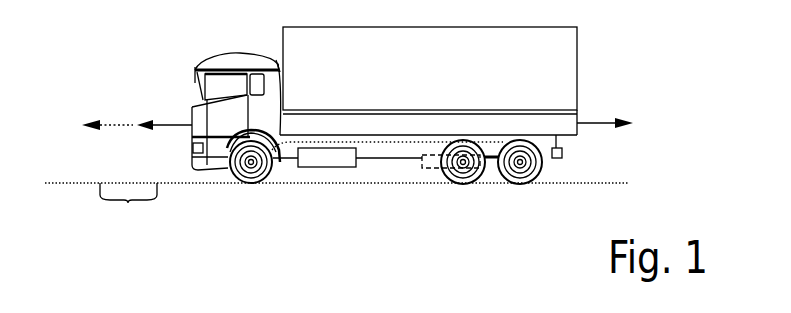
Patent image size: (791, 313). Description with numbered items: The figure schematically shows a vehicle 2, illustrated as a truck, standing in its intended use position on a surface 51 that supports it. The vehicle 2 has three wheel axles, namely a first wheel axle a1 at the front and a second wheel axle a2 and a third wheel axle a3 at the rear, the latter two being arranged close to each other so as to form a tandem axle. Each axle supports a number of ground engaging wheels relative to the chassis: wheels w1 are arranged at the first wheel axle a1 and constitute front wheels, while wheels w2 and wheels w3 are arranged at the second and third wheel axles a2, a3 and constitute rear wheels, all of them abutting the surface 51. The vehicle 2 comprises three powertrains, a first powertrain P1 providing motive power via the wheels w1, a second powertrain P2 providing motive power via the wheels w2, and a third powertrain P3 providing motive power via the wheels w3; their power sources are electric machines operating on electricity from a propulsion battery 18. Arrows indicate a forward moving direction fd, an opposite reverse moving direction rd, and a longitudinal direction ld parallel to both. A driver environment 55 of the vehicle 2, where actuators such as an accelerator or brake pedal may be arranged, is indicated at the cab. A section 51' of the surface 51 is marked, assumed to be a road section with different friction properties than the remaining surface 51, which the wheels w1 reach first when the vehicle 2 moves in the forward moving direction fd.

The vehicle 2 is at (410, 11).
The driver environment 55 is at (228, 87).
The first powertrain P1 is at (272, 65).
The second powertrain P2 is at (430, 156).
The third powertrain P3 is at (492, 156).
The propulsion battery 18 is at (325, 160).
The wheels arranged at the first wheel axle w1 is at (235, 170).
The wheels arranged at the second wheel axle w2 is at (448, 172).
The wheels arranged at the third wheel axle w3 is at (538, 172).
The first wheel axle a1 is at (251, 170).
The second wheel axle a2 is at (463, 170).
The third wheel axle a3 is at (521, 170).
The longitudinal direction ld is at (122, 125).
The forward moving direction fd is at (172, 125).
The reverse moving direction rd is at (597, 123).
The surface 51 is at (336, 164).
The section of the surface 51' is at (128, 211).